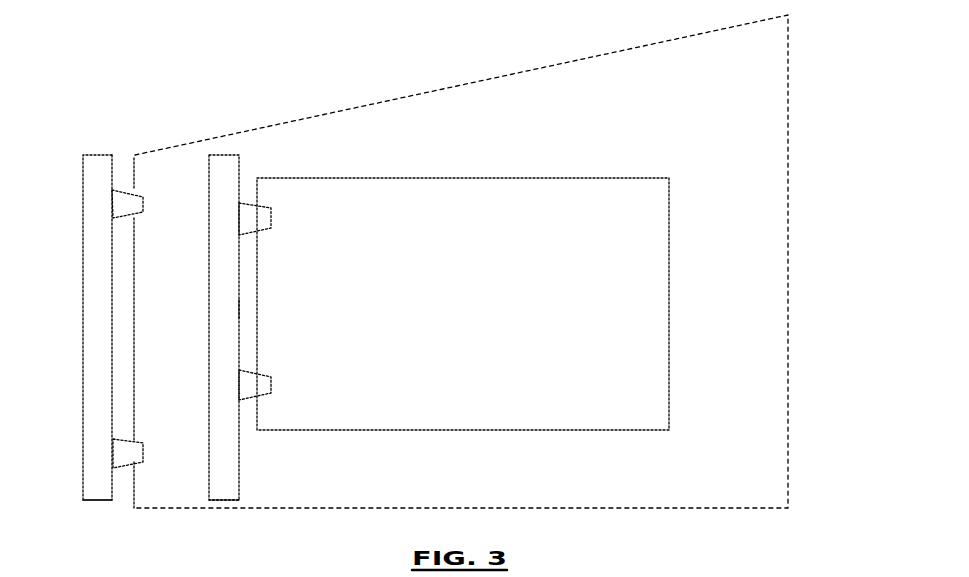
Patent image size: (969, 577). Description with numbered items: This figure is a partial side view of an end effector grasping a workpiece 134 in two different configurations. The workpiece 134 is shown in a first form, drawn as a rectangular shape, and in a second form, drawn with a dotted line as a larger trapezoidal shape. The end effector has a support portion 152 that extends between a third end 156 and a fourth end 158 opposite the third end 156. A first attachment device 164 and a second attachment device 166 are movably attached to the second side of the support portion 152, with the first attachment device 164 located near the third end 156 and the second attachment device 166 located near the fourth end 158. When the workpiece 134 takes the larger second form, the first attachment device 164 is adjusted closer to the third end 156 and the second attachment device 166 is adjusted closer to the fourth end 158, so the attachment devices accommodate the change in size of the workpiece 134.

The workpiece 134 is at (442, 178).
The support portion 152 is at (226, 310).
The third end 156 is at (87, 156).
The fourth end 158 is at (92, 490).
The first attachment device 164 is at (125, 190).
The second attachment device 166 is at (127, 477).